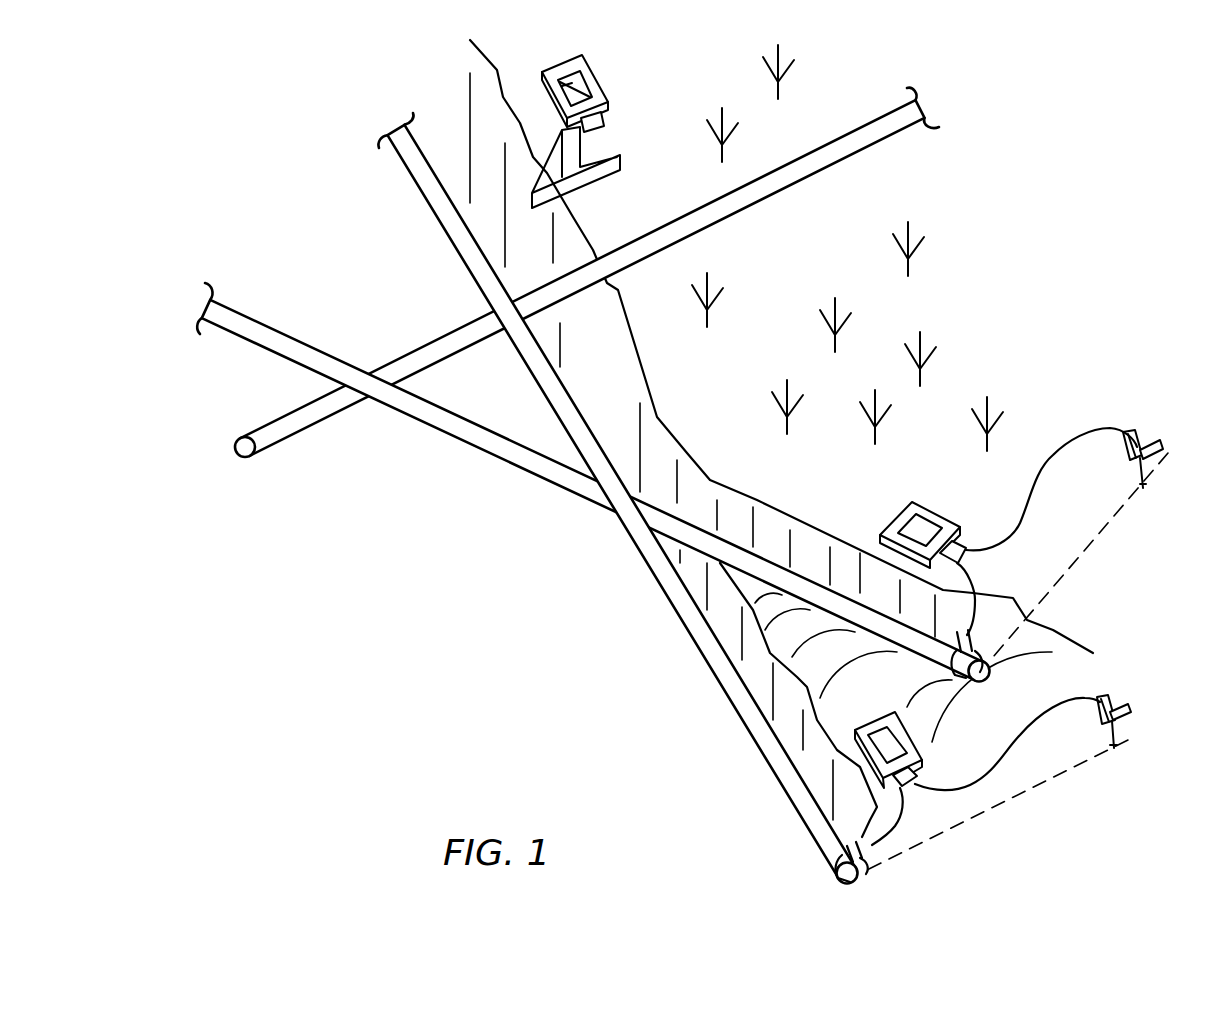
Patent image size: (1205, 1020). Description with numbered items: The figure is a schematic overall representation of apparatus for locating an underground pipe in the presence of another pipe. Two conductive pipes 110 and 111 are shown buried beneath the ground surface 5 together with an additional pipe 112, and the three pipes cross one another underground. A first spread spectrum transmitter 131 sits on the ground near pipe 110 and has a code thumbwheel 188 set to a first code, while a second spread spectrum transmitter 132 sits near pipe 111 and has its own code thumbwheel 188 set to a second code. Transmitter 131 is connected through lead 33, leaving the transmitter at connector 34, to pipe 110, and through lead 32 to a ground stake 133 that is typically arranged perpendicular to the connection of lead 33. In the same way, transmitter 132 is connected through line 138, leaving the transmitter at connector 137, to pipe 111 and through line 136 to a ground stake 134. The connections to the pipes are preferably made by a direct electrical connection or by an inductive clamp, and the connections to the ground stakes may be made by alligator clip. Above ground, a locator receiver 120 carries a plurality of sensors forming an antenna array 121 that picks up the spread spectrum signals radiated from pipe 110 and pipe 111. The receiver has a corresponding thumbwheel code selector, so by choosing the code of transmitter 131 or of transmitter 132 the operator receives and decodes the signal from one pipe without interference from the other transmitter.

The ground surface 5 is at (846, 470).
The conductive pipe 110 is at (510, 470).
The conductive pipe 111 is at (760, 768).
The additional pipe 112 is at (295, 443).
The locator receiver 120 is at (610, 73).
The antenna array 121 is at (620, 180).
The first spread spectrum transmitter 131 is at (920, 490).
The second spread spectrum transmitter 132 is at (913, 722).
The ground stake 133 is at (1142, 427).
The ground stake 134 is at (1115, 705).
The lead 32 is at (1060, 452).
The lead 33 is at (975, 596).
The connector 34 is at (963, 545).
The line 136 is at (1020, 739).
The connector 137 is at (917, 782).
The line 138 is at (903, 814).
The code thumbwheel 188 is at (892, 517).